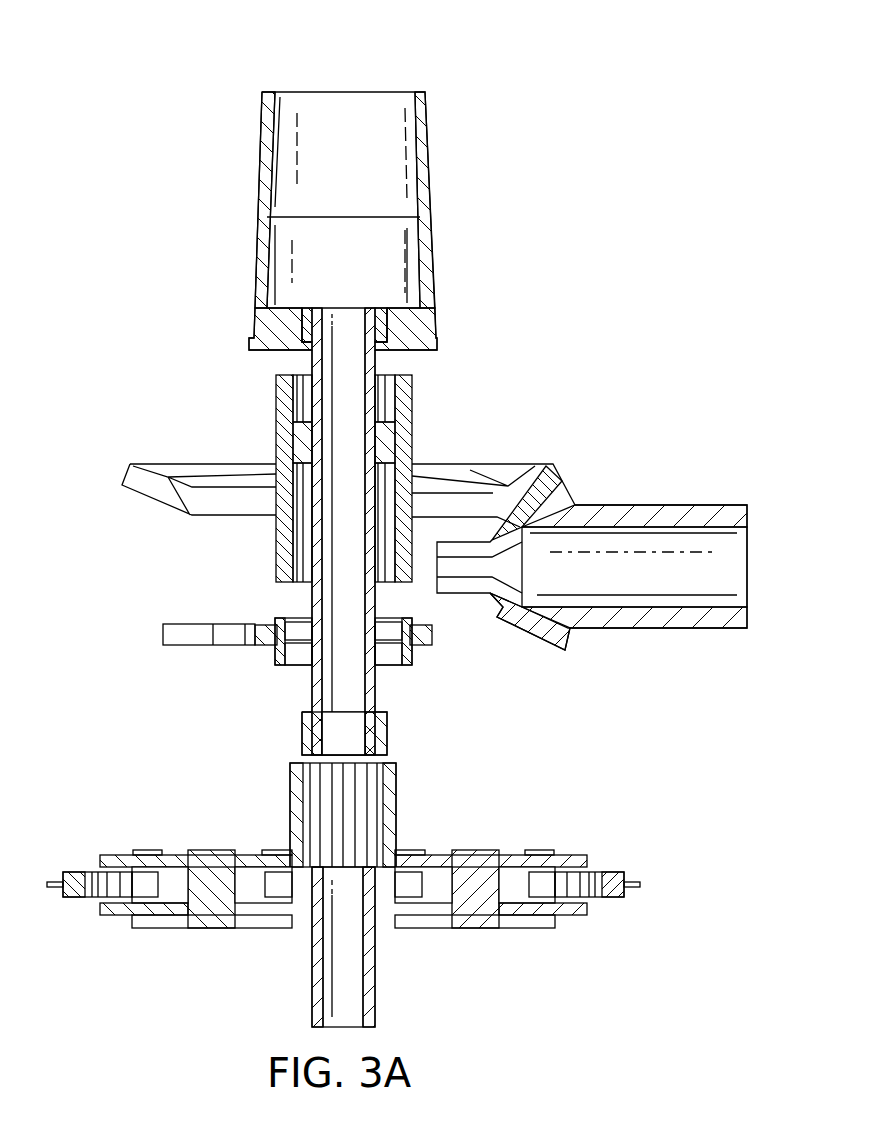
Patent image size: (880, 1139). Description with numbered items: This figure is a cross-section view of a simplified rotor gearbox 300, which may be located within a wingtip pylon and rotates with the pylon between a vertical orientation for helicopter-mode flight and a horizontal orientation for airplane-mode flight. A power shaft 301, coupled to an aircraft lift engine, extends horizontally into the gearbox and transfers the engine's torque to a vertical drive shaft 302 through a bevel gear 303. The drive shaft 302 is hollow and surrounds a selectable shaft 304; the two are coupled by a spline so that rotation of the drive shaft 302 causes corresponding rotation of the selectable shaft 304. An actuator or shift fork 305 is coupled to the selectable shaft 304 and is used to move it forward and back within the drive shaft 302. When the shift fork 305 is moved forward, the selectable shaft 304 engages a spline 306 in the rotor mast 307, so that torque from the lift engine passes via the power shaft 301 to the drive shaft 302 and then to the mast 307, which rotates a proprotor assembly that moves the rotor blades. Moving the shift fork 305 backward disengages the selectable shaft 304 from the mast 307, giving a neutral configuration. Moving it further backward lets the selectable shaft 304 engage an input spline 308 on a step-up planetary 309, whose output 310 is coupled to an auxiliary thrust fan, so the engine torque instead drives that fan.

The rotor gearbox 300 is at (510, 58).
The power shaft 301 is at (662, 503).
The drive shaft 302 is at (282, 420).
The bevel gear 303 is at (518, 463).
The selectable shaft 304 is at (370, 688).
The shift fork 305 is at (188, 647).
The spline 306 is at (265, 322).
The rotor mast 307 is at (366, 278).
The input spline 308 is at (390, 807).
The step-up planetary 309 is at (210, 920).
The output 310 is at (368, 985).